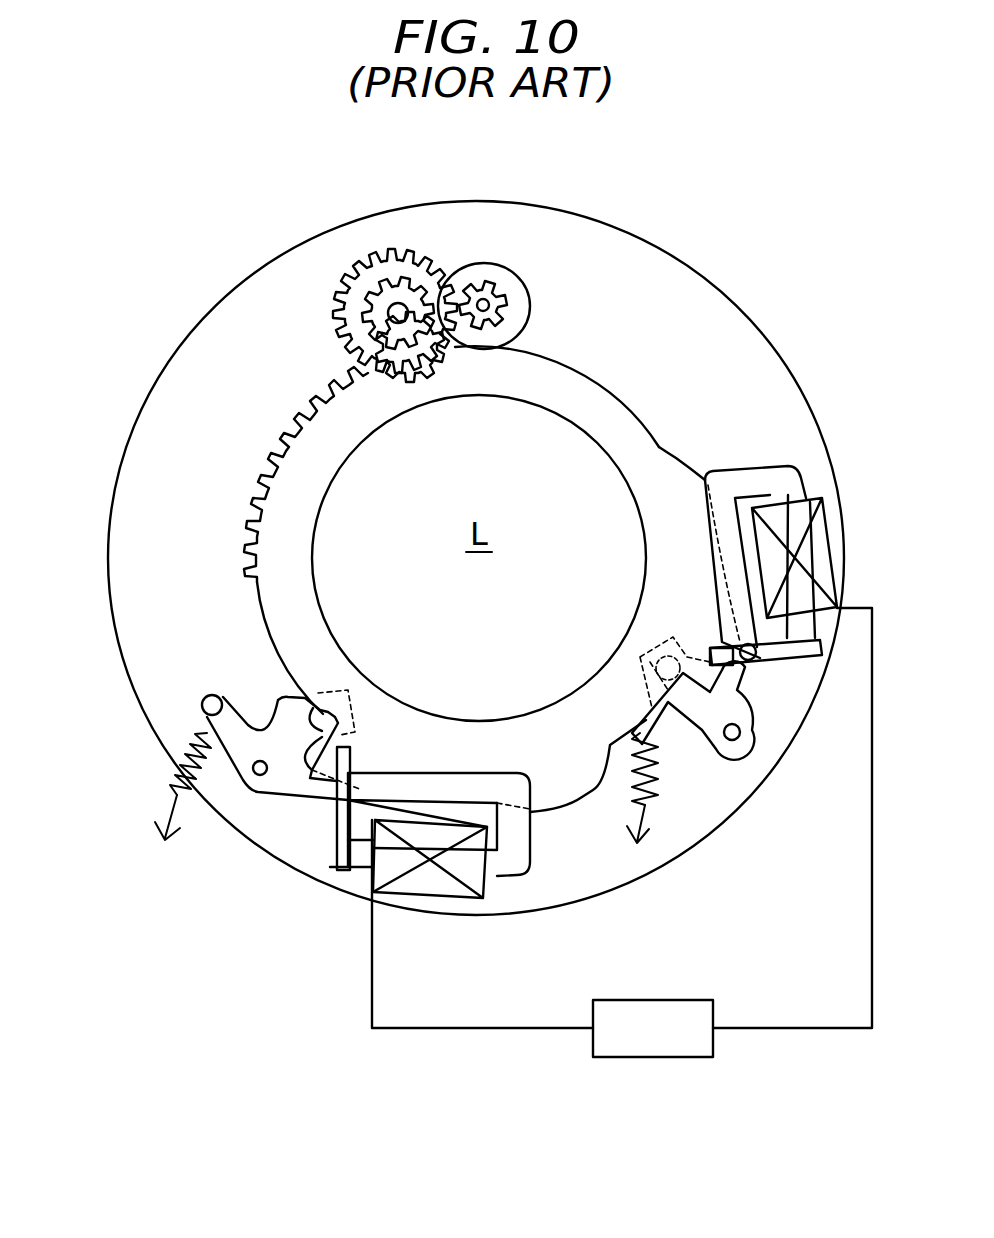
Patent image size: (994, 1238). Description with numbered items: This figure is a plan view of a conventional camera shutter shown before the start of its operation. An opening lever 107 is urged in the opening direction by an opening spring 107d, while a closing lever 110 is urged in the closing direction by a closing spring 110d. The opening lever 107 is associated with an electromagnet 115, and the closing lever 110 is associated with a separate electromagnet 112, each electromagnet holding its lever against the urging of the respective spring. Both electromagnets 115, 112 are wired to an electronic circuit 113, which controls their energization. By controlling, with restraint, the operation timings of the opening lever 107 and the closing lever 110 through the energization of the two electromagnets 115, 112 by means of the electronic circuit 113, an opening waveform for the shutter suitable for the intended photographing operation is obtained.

The opening lever 107 is at (280, 785).
The opening spring 107d is at (168, 806).
The closing lever 110 is at (705, 728).
The closing spring 110d is at (647, 810).
The electromagnet 112 is at (783, 484).
The electronic circuit 113 is at (683, 1039).
The electromagnet 115 is at (505, 868).